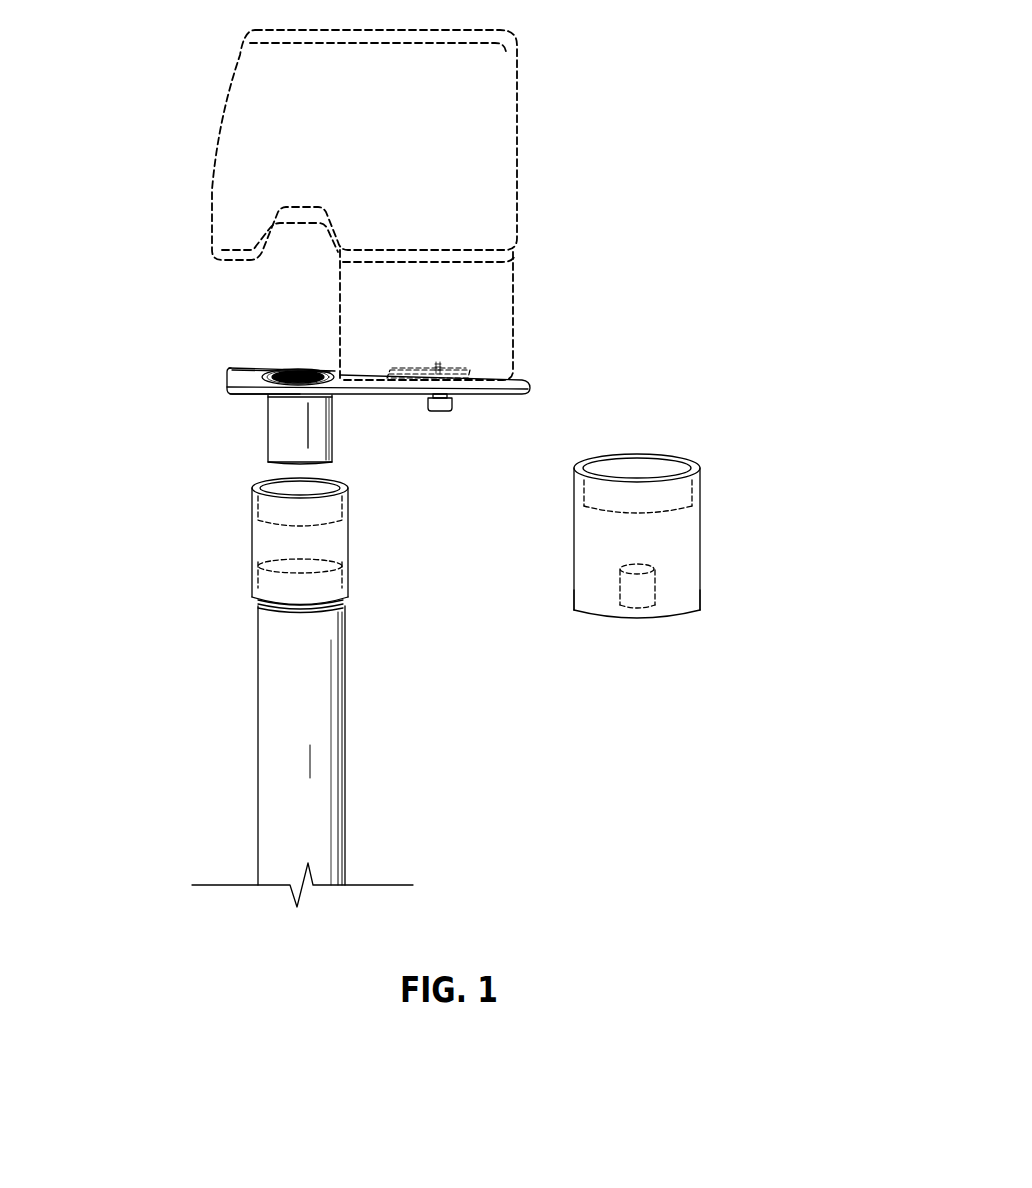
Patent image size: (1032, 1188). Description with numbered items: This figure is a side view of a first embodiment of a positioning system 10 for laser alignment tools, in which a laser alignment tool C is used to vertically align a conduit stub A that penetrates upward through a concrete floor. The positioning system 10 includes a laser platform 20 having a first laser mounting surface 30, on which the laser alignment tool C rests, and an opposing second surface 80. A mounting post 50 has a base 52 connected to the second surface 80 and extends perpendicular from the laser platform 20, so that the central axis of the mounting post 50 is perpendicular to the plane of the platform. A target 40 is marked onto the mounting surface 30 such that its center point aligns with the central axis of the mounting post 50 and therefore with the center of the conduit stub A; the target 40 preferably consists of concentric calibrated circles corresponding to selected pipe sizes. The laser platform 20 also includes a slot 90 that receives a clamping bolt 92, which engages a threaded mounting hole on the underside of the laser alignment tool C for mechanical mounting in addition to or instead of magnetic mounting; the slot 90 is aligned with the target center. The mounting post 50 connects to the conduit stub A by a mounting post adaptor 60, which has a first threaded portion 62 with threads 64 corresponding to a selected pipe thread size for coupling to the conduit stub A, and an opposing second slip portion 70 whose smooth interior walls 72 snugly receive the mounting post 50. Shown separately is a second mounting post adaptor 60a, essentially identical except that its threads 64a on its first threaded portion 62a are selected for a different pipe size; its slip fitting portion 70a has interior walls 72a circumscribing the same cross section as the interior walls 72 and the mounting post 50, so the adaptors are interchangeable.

The positioning system 10 is at (126, 192).
The laser alignment tool C is at (497, 63).
The laser platform 20 is at (227, 375).
The first laser mounting surface 30 is at (237, 378).
The second surface 80 is at (240, 396).
The target 40 is at (293, 370).
The mounting post 50 is at (332, 437).
The base 52 is at (268, 399).
The slot 90 is at (446, 372).
The clamping bolt 92 is at (452, 405).
The mounting post adaptor 60 is at (349, 532).
The interior walls 72 is at (273, 485).
The second slip portion 70 is at (252, 500).
The first threaded portion 62 is at (252, 590).
The threads 64 is at (270, 592).
The conduit stub A is at (345, 786).
The mounting post adaptor 60a is at (735, 490).
The interior walls 72a is at (638, 463).
The slip fitting portion 70a is at (702, 500).
The first threaded portion 62a is at (702, 588).
The threads 64a is at (640, 594).